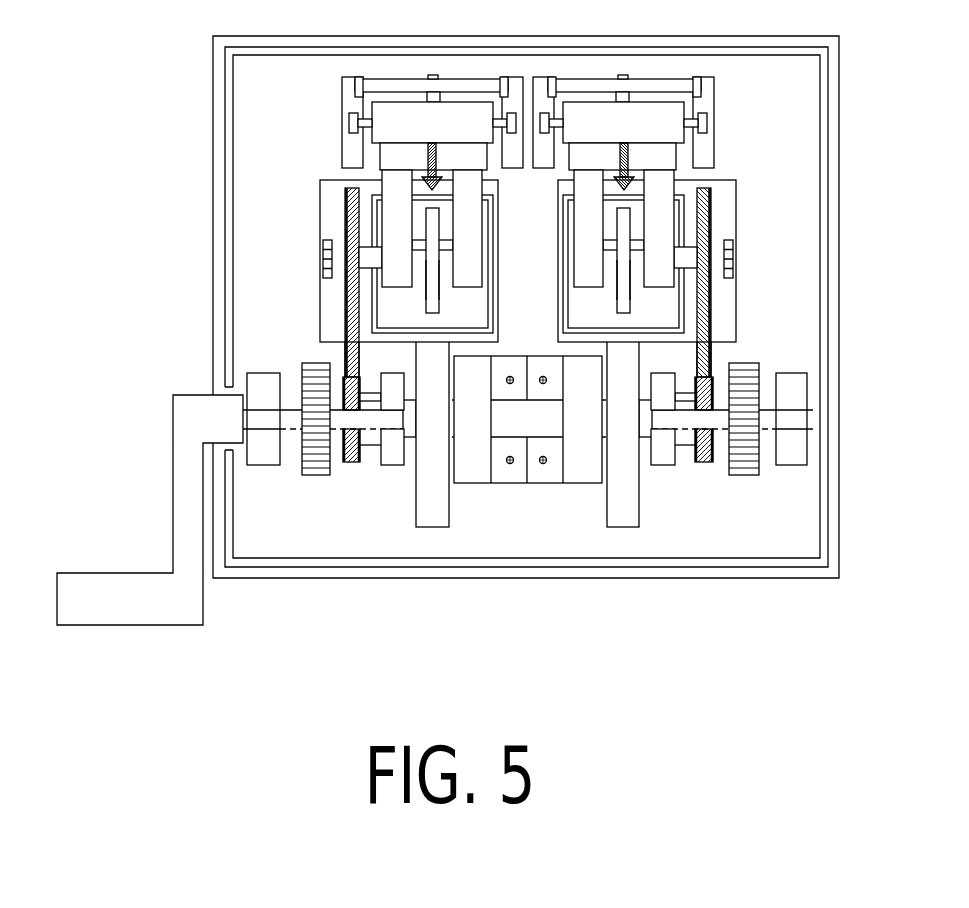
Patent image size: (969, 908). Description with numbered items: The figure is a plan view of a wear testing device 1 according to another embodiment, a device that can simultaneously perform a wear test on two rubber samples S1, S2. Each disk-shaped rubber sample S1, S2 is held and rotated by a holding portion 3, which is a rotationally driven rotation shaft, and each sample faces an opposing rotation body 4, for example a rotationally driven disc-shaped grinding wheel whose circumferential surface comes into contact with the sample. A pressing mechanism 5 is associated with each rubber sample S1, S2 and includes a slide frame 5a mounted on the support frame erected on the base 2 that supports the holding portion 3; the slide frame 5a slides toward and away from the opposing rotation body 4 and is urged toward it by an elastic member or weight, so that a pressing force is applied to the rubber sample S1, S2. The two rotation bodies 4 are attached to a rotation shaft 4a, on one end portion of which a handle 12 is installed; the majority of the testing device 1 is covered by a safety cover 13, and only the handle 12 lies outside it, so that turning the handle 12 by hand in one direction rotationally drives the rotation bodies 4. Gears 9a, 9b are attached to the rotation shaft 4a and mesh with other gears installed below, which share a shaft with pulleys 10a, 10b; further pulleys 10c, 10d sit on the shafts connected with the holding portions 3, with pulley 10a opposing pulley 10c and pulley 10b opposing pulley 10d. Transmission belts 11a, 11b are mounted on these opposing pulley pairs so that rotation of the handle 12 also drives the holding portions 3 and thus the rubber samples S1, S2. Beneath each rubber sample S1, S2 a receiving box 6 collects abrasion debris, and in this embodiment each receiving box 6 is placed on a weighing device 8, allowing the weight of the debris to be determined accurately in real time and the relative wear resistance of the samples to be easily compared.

The wear testing device 1 is at (186, 86).
The base 2 is at (546, 547).
The holding portion 3 is at (448, 258).
The rotation body 4 is at (433, 500).
The rotation shaft 4a is at (373, 422).
The pressing mechanism 5 is at (329, 127).
The slide frame 5a is at (475, 213).
The receiving box 6 is at (402, 323).
The weighing device 8 is at (332, 210).
The gear 9a is at (300, 460).
The gear 9b is at (752, 462).
The pulley 10a is at (343, 453).
The pulley 10b is at (718, 453).
The pulley 10c is at (345, 291).
The pulley 10d is at (712, 291).
The transmission belt 11a is at (344, 355).
The transmission belt 11b is at (710, 352).
The handle 12 is at (108, 592).
The safety cover 13 is at (336, 565).
The rubber sample S1 is at (433, 293).
The rubber sample S2 is at (622, 290).